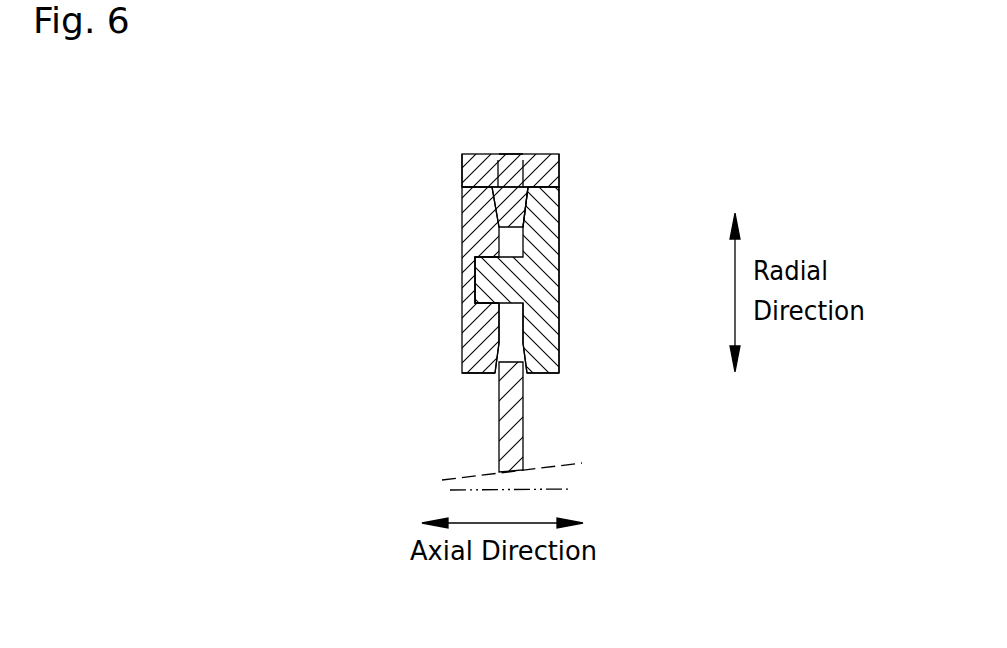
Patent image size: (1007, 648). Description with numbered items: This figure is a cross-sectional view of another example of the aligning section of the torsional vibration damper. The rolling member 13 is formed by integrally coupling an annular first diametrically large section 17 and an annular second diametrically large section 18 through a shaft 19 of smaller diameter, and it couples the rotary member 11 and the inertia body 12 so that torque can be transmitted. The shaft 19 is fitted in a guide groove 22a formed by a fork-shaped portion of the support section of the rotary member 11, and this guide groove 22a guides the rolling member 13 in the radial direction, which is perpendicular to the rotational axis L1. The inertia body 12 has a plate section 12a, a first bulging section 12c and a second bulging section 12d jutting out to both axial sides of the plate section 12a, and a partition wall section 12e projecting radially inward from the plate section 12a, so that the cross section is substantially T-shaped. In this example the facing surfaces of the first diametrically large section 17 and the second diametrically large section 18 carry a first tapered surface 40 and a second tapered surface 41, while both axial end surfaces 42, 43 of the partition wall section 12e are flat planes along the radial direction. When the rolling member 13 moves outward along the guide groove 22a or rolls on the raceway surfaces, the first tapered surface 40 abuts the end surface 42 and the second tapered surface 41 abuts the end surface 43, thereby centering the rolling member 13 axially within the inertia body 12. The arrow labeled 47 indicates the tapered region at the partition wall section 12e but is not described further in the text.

The rotary member 11 is at (532, 416).
The inertia body 12 is at (544, 143).
The plate section 12a is at (519, 162).
The first bulging section 12c is at (472, 158).
The second bulging section 12d is at (559, 157).
The partition wall section 12e is at (510, 205).
The rolling member 13 is at (573, 287).
The first diametrically large section 17 is at (475, 238).
The second diametrically large section 18 is at (548, 258).
The shaft 19 is at (478, 291).
The guide groove 22a is at (507, 328).
The first tapered surface 40 is at (470, 354).
The second tapered surface 41 is at (548, 352).
The end surface 42 is at (475, 207).
The end surface 43 is at (548, 213).
The tapered gap 47 is at (536, 222).
The rotational axis L1 is at (560, 486).